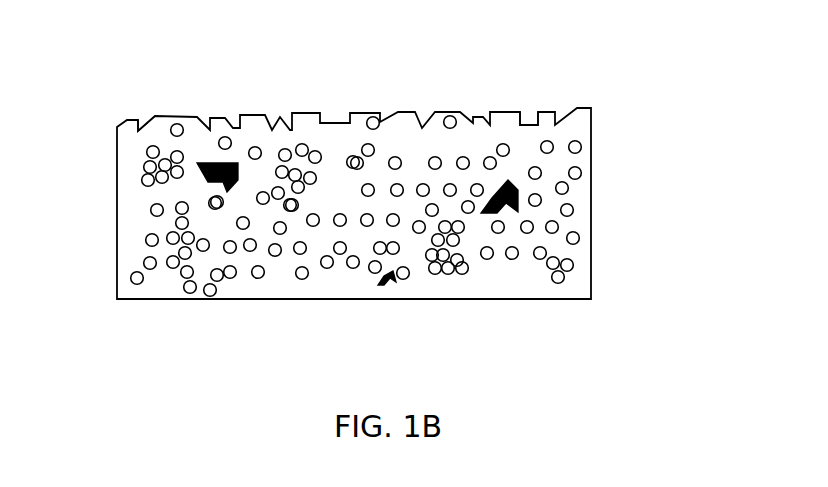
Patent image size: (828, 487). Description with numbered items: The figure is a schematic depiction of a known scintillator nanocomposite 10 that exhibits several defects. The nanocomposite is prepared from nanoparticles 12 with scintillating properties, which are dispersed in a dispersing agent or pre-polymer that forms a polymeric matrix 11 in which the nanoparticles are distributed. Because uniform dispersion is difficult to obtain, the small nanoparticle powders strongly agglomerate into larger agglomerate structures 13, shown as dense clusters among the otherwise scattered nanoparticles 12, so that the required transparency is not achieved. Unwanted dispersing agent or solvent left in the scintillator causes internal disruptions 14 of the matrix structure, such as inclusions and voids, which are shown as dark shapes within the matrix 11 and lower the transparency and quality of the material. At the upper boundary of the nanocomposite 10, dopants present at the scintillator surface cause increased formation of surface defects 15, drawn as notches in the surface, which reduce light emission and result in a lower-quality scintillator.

The scintillator nanocomposite 10 is at (592, 135).
The polymeric matrix 11 is at (347, 300).
The nanoparticles 12 is at (580, 237).
The agglomerate structures 13 is at (145, 181).
The internal disruptions 14 is at (222, 163).
The surface defects 15 is at (153, 121).